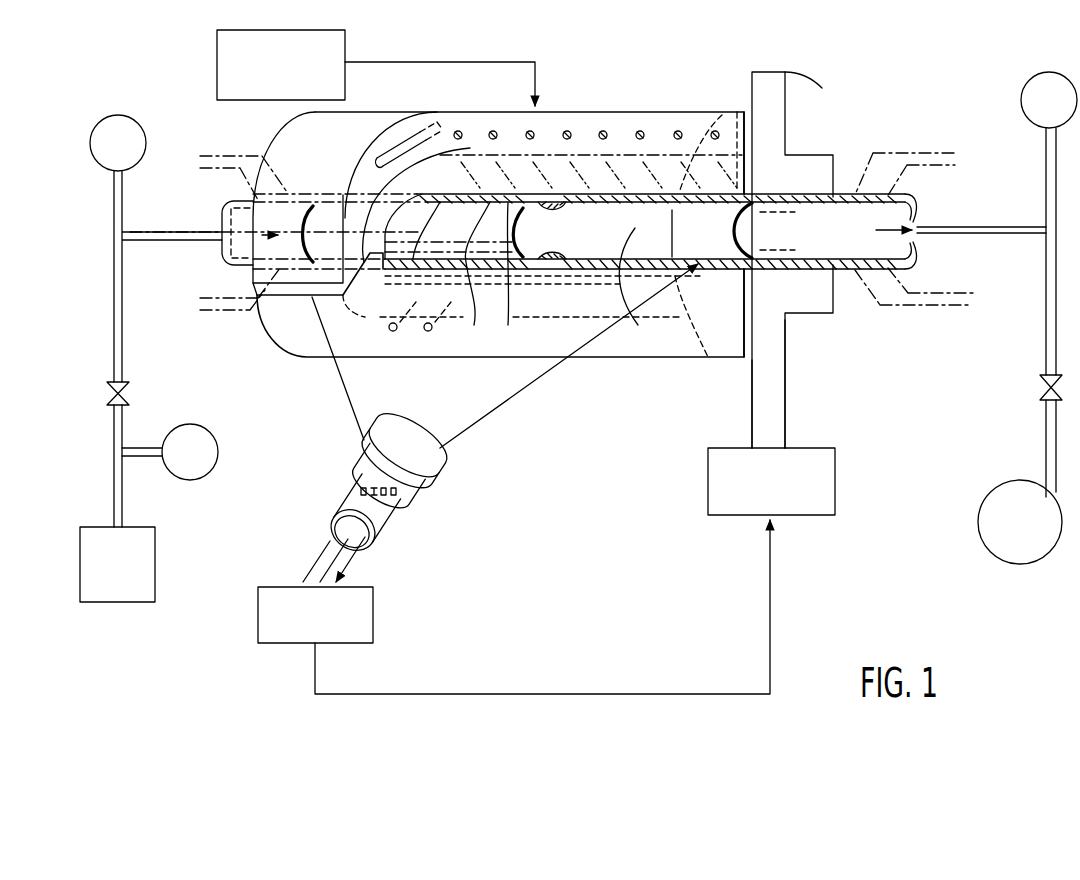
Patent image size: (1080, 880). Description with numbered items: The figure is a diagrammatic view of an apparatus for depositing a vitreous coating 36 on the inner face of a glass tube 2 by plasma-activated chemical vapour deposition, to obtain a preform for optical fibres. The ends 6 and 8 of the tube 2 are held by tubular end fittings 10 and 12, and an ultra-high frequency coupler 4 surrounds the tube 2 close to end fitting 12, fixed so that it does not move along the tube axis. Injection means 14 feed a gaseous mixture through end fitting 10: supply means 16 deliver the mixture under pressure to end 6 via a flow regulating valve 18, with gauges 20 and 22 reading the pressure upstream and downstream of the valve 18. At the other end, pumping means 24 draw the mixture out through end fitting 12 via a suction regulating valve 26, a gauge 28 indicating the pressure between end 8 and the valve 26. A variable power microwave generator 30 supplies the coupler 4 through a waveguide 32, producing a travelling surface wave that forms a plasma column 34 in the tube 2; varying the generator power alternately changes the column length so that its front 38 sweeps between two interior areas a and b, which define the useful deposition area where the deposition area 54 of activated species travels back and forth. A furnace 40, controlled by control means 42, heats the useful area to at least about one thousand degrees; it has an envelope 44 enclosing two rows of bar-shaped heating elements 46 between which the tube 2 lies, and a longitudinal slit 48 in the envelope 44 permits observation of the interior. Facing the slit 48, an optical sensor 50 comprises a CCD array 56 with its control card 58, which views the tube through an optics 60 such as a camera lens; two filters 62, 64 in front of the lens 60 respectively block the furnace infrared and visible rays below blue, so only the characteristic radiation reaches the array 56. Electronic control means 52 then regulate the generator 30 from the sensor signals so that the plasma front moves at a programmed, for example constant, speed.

The glass tube 2 is at (808, 192).
The ultra-high frequency coupler 4 is at (768, 80).
The end of the tube 6 is at (222, 215).
The end of the tube 8 is at (917, 200).
The end fitting 10 is at (224, 160).
The end fitting 12 is at (910, 158).
The injection means 14 is at (96, 452).
The supply means 16 is at (148, 568).
The flow regulating valve 18 is at (124, 392).
The gauge 20 is at (206, 468).
The gauge 22 is at (120, 128).
The pumping means 24 is at (1019, 482).
The suction regulating valve 26 is at (1040, 390).
The gauge 28 is at (1069, 70).
The variable power microwave generator 30 is at (575, 571).
The waveguide 32 is at (783, 412).
The plasma column 34 is at (592, 279).
The vitreous coating 36 is at (470, 276).
The front of the plasma column 38 is at (523, 276).
The furnace 40 is at (616, 108).
The furnace control means 42 is at (376, 68).
The envelope 44 is at (662, 122).
The heating elements 46 is at (408, 135).
The slit 48 is at (295, 288).
The optical sensor 50 is at (495, 435).
The electronic control means 52 is at (315, 615).
The deposition area 54 is at (556, 208).
The charge coupled device array 56 is at (361, 516).
The control card 58 is at (385, 518).
The optics 60 is at (385, 479).
The filter 62 is at (396, 463).
The filter 64 is at (412, 438).
The area of the tube interior a is at (770, 196).
The area of the tube interior b is at (318, 206).